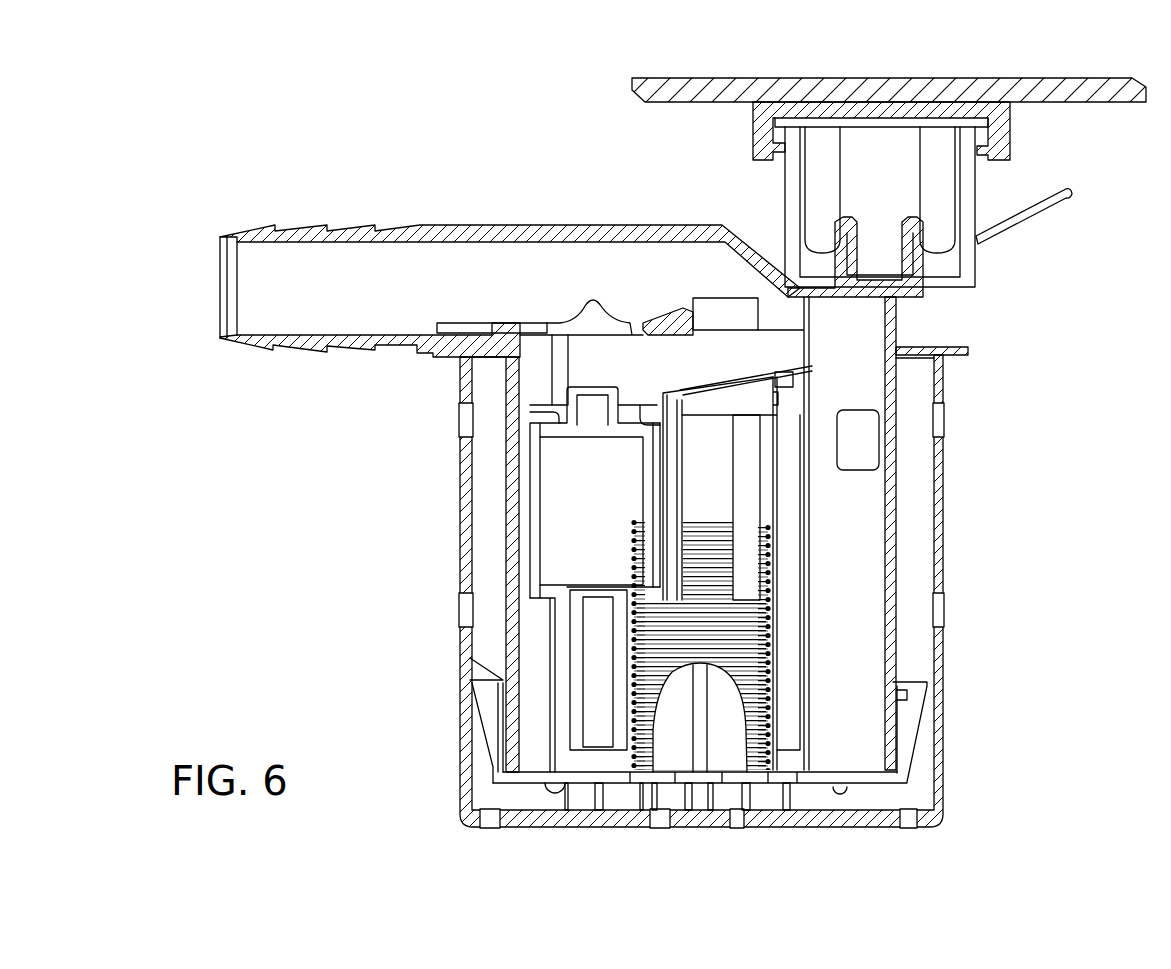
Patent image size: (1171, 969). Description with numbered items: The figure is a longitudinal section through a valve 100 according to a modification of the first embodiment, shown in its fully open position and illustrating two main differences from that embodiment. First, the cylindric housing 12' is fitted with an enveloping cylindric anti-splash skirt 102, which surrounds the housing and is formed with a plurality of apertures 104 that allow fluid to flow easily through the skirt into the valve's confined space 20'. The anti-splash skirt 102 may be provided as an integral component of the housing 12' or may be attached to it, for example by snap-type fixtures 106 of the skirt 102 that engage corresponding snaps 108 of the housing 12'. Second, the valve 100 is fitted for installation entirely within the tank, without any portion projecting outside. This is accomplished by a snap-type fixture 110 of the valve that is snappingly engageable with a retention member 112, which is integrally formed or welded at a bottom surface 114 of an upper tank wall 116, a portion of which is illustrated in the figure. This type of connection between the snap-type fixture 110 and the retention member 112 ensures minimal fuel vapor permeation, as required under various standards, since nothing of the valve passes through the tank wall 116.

The valve 100 is at (655, 553).
The anti-splash skirt 102 is at (942, 375).
The apertures 104 is at (465, 415).
The snap-type fixtures 106 is at (927, 673).
The snaps 108 is at (907, 698).
The snap-type fixture 110 is at (859, 199).
The retention member 112 is at (1003, 135).
The bottom surface 114 is at (725, 105).
The upper tank wall 116 is at (673, 92).
The cylindric housing 12' is at (777, 534).
The confined space 20' is at (695, 799).